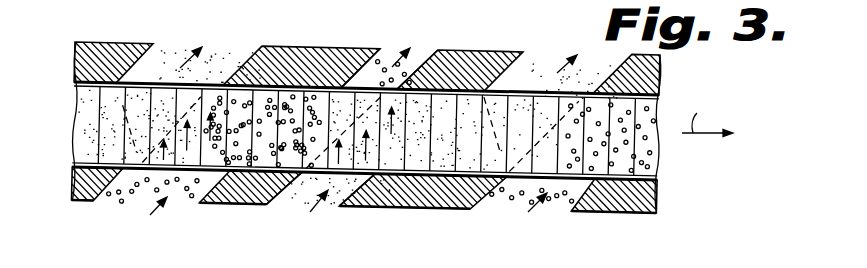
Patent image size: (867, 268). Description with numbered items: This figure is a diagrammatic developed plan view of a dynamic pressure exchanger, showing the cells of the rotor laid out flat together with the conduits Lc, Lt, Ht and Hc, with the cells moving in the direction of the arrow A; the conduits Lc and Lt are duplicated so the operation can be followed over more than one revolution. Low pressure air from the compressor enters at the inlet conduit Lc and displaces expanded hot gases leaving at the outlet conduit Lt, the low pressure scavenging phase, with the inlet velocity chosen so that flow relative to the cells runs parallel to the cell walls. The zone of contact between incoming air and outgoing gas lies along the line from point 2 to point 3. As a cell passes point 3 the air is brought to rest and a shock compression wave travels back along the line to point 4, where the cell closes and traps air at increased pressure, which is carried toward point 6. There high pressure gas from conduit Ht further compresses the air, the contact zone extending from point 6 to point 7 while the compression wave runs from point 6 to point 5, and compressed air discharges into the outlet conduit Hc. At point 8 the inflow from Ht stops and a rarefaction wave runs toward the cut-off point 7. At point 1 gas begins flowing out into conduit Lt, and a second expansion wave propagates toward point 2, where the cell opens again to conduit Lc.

The point 1 is at (296, 67).
The point 2 is at (286, 188).
The point 3 is at (440, 69).
The point 4 is at (425, 191).
The point 5 is at (360, 68).
The point 6 is at (289, 188).
The point 7 is at (413, 69).
The point 8 is at (357, 190).
The low pressure turbine conduit Lt is at (385, 52).
The low pressure compressor conduit Lc is at (334, 210).
The high pressure compressor conduit Hc is at (414, 52).
The high pressure turbine conduit Ht is at (316, 207).
The arrow A is at (707, 121).